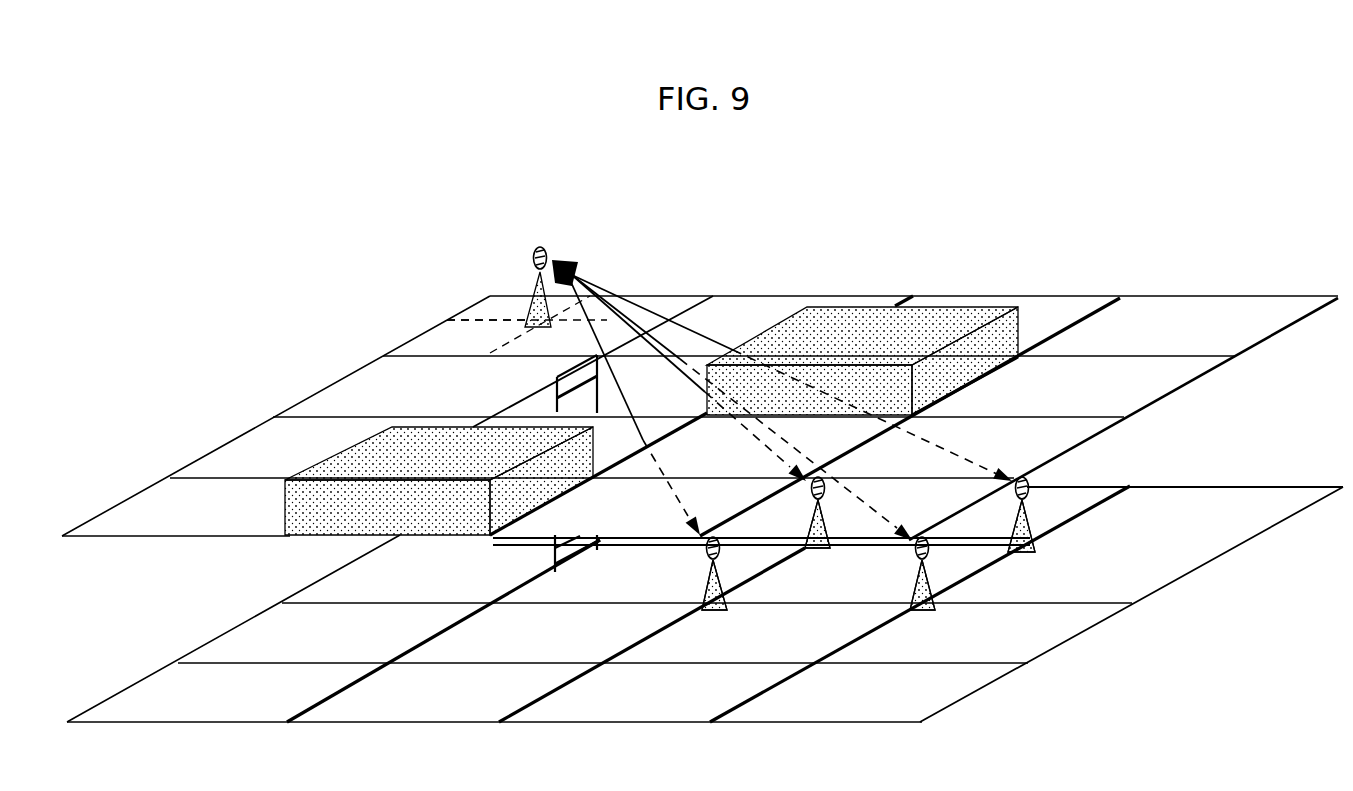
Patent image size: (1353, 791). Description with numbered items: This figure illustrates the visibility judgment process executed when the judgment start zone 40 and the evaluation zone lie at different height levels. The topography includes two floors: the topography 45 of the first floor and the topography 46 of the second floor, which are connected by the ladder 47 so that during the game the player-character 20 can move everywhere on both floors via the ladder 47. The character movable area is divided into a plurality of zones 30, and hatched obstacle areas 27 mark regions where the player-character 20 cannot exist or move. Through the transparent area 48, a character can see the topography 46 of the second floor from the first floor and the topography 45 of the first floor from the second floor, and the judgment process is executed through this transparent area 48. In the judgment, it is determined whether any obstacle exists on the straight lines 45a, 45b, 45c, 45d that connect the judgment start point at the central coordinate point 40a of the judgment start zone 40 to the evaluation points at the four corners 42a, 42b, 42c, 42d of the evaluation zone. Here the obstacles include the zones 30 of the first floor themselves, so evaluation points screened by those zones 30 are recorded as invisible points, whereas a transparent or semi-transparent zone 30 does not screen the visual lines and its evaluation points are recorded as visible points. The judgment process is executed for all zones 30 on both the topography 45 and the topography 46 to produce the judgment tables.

The player-character 20 is at (540, 246).
The obstacle area 27 is at (320, 512).
The zone 30 is at (1232, 308).
The judgment start zone 40 is at (434, 343).
The central coordinate point 40a is at (470, 298).
The corner of evaluation zone 42a is at (806, 546).
The corner of evaluation zone 42b is at (1030, 550).
The corner of evaluation zone 42c is at (922, 605).
The corner of evaluation zone 42d is at (707, 610).
The topography of the first floor 45 is at (238, 428).
The straight line 45a is at (687, 376).
The straight line 45b is at (733, 345).
The straight line 45c is at (712, 374).
The straight line 45d is at (602, 352).
The topography of the second floor 46 is at (218, 632).
The ladder 47 is at (557, 380).
The transparent area 48 is at (597, 400).